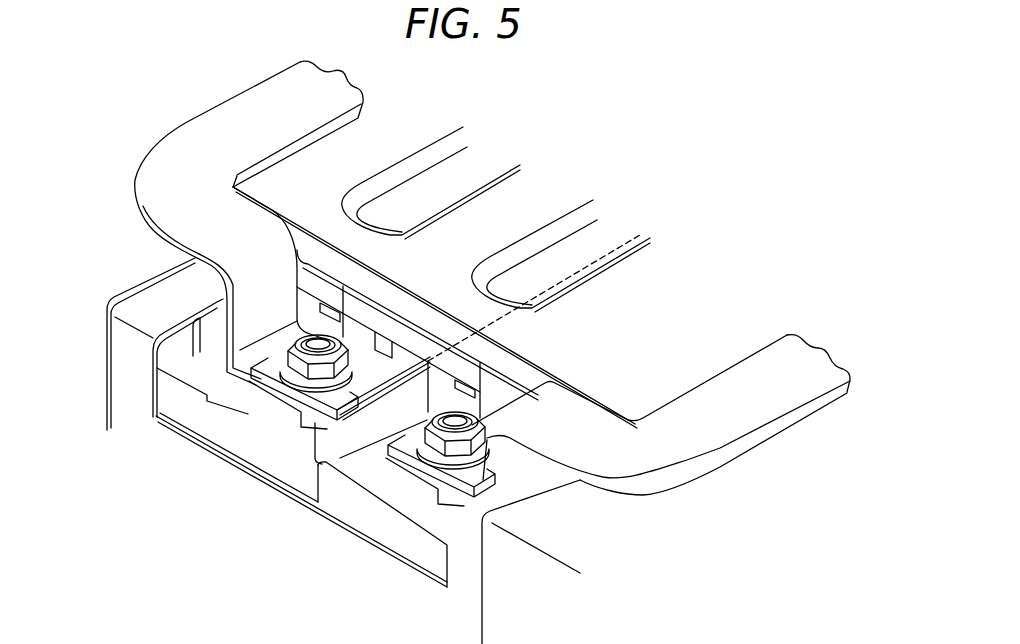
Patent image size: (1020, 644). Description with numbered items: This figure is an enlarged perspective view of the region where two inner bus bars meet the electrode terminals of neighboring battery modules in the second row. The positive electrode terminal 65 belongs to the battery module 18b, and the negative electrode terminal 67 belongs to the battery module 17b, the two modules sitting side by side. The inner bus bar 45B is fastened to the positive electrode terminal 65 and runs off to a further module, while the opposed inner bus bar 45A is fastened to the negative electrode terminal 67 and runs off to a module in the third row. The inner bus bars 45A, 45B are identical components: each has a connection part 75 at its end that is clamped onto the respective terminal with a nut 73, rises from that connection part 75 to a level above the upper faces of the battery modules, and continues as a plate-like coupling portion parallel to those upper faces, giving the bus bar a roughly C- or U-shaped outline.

The inner bus bar 45A is at (752, 452).
The inner bus bar 45B is at (188, 113).
The positive electrode terminal 65 is at (315, 340).
The negative electrode terminal 67 is at (455, 420).
The nut 73 is at (310, 372).
The connection part 75 is at (262, 370).
The battery module 17b is at (397, 534).
The battery module 18b is at (196, 422).